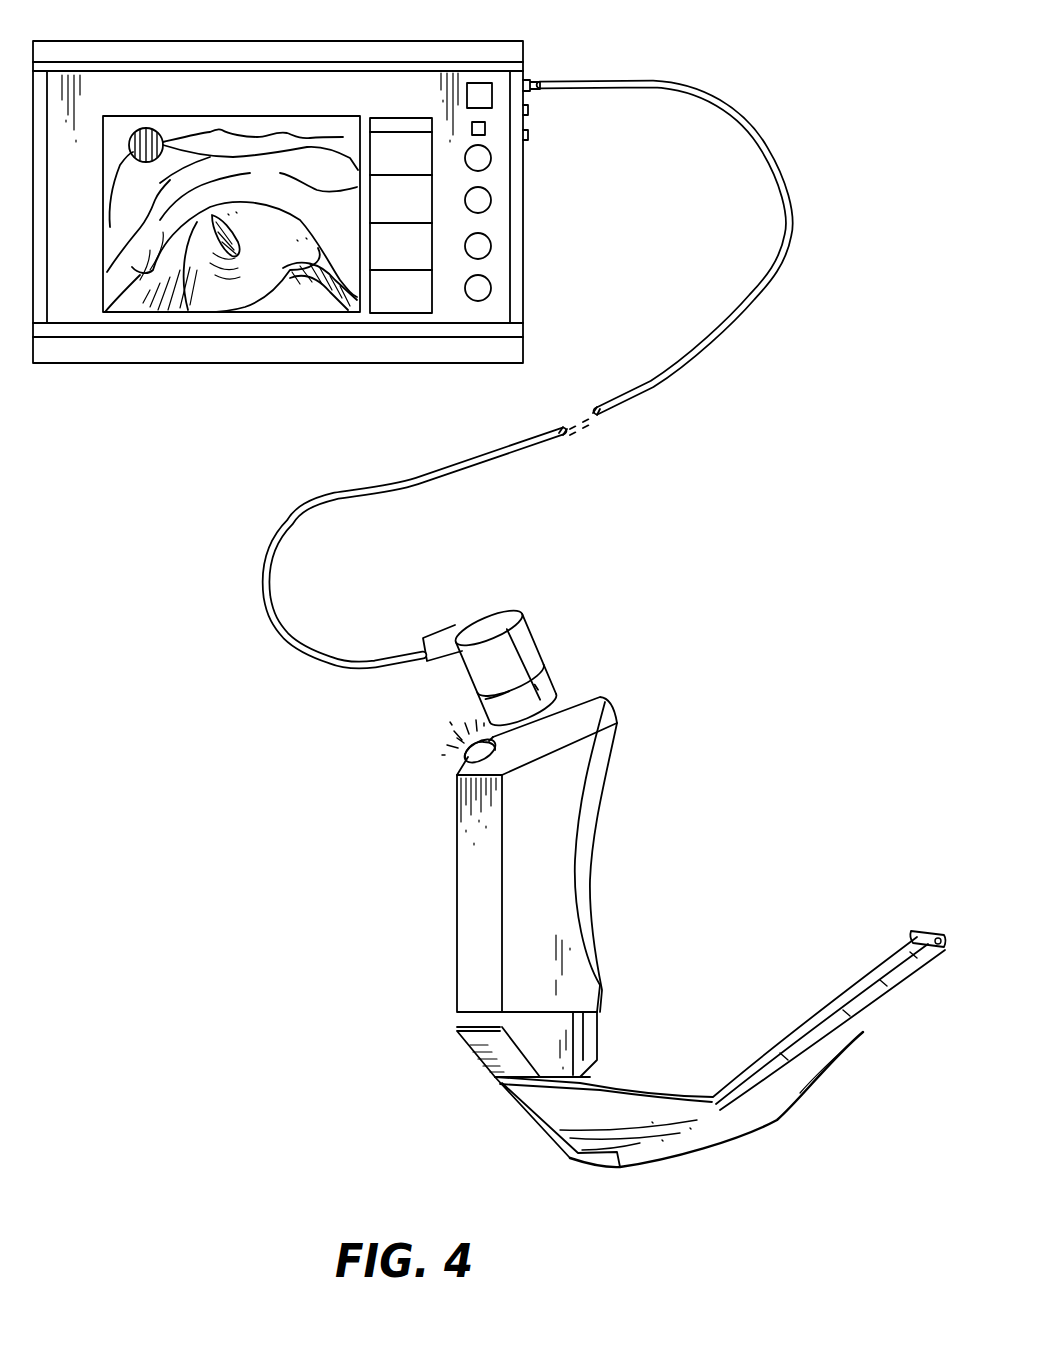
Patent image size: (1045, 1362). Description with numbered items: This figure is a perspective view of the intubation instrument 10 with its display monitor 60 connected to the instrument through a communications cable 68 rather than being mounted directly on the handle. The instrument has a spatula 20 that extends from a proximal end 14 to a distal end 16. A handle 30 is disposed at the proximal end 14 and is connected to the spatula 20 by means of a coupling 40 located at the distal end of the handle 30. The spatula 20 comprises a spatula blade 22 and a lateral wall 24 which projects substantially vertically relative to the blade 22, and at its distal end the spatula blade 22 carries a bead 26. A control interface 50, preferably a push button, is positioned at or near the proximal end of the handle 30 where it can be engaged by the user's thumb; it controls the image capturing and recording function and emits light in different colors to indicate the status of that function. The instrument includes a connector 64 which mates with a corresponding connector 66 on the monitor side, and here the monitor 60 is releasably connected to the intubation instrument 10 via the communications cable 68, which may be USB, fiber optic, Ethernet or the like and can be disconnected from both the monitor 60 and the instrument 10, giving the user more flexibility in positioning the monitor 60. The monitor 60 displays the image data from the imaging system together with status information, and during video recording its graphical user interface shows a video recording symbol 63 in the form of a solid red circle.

The intubation instrument 10 is at (413, 873).
The proximal end 14 is at (478, 1102).
The distal end 16 is at (896, 1022).
The spatula 20 is at (737, 1137).
The spatula blade 22 is at (867, 1000).
The lateral wall 24 is at (618, 1160).
The bead 26 is at (930, 933).
The handle 30 is at (460, 960).
The coupling 40 is at (603, 1025).
The control interface 50 is at (457, 753).
The display monitor 60 is at (479, 41).
The video recording symbol 63 is at (150, 128).
The connector 64 is at (553, 688).
The connector 66 is at (543, 643).
The communications cable 68 is at (765, 288).